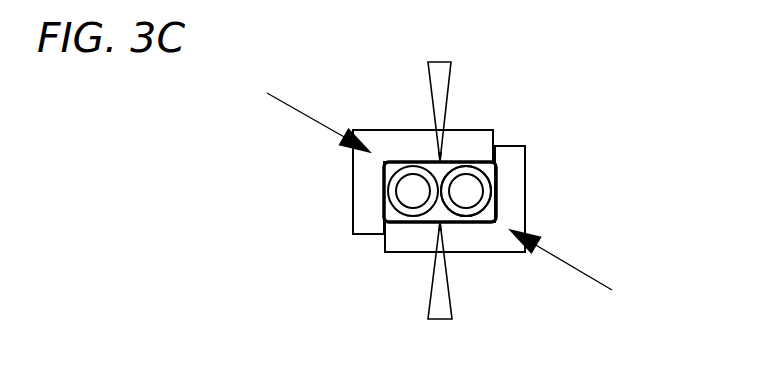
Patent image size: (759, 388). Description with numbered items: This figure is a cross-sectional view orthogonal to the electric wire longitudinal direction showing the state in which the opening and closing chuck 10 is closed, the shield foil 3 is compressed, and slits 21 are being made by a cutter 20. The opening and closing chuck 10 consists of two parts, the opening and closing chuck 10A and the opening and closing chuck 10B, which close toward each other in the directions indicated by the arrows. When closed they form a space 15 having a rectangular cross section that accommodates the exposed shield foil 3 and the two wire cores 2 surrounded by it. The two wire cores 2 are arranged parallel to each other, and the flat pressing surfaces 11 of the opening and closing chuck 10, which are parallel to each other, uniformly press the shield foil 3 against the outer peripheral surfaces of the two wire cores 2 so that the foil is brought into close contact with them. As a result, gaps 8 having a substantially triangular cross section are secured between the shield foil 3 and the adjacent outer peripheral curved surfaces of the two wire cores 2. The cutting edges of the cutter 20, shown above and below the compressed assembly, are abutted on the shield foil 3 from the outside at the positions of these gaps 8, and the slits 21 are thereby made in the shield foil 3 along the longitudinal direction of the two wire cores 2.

The wire core 2 is at (404, 218).
The shield foil 3 is at (450, 174).
The gap 8 is at (447, 168).
The flat pressing surface 11 is at (403, 178).
The space 15 is at (477, 184).
The cutter 20 is at (449, 86).
The slit 21 is at (428, 164).
The opening and closing chuck 10 is at (446, 191).
The opening and closing chuck 10A is at (362, 205).
The opening and closing chuck 10B is at (517, 188).